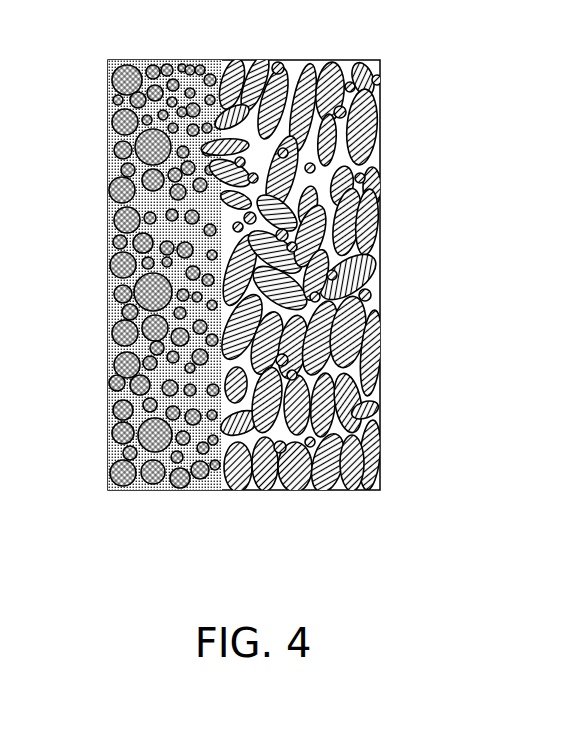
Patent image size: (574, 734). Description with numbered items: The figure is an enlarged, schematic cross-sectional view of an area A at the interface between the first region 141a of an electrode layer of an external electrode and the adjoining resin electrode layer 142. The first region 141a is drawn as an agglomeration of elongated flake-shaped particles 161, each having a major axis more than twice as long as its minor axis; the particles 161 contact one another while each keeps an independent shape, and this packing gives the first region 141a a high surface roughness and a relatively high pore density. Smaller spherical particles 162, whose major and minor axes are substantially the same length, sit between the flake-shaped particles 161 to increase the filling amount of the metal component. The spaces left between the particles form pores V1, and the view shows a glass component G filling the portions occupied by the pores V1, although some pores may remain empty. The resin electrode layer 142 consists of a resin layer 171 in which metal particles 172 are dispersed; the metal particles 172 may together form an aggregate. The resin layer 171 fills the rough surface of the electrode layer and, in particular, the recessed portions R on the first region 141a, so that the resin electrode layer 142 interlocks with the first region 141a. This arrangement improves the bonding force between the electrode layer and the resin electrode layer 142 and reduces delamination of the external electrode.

The enlarged area A is at (242, 592).
The recessed portion R is at (227, 80).
The glass component G is at (378, 166).
The pore V1 is at (365, 338).
The first region 141a is at (328, 277).
The resin electrode layer 142 is at (129, 300).
The flake-shaped particle 161 is at (374, 421).
The spherical particle 162 is at (371, 296).
The resin layer 171 is at (108, 172).
The metal particle 172 is at (108, 230).